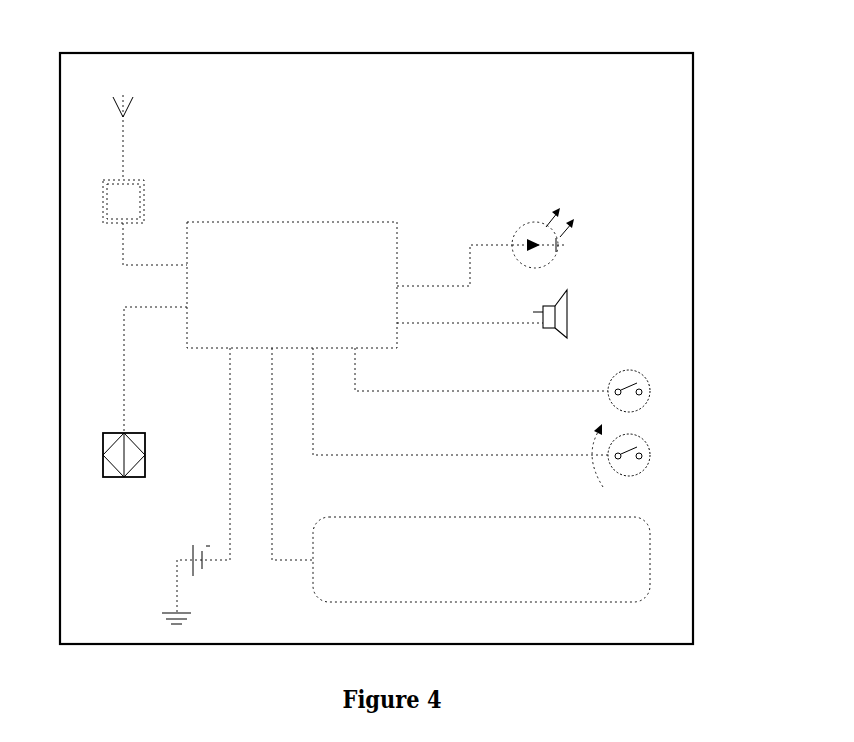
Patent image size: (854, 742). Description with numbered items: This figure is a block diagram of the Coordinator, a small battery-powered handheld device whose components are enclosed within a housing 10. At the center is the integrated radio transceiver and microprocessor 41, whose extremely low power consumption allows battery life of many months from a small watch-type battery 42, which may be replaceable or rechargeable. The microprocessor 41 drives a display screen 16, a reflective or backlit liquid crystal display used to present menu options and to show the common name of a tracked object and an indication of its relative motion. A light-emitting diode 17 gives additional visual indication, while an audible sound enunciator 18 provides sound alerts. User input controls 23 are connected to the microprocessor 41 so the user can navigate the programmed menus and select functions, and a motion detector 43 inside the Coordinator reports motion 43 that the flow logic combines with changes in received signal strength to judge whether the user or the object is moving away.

The portable communication device 10 is at (268, 42).
The display screen 16 is at (650, 560).
The light-emitting diode 17 is at (535, 222).
The audible sound enunciator 18 is at (567, 290).
The user input control 23 is at (629, 370).
The integrated radio transceiver and microprocessor 41 is at (293, 222).
The battery 42 is at (188, 548).
The motion detection 43 is at (112, 433).